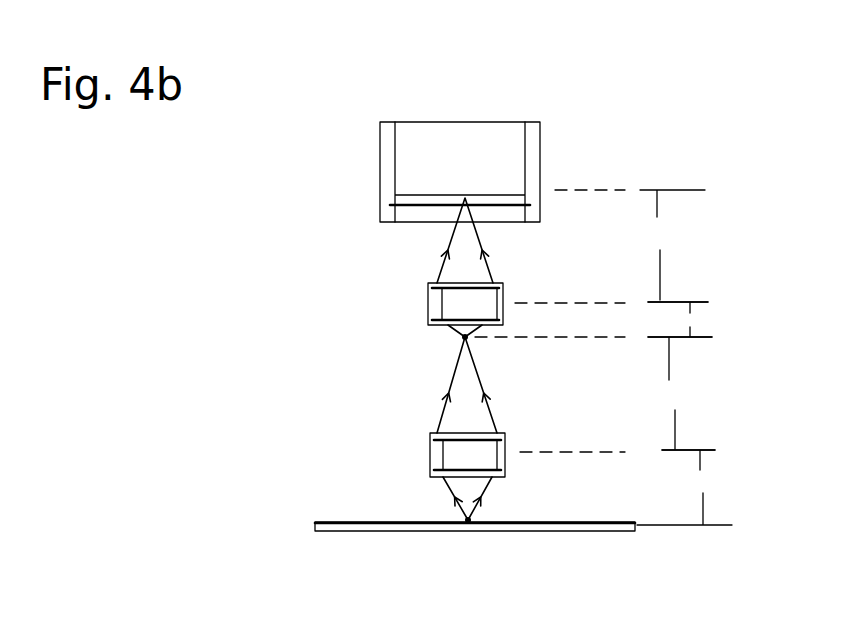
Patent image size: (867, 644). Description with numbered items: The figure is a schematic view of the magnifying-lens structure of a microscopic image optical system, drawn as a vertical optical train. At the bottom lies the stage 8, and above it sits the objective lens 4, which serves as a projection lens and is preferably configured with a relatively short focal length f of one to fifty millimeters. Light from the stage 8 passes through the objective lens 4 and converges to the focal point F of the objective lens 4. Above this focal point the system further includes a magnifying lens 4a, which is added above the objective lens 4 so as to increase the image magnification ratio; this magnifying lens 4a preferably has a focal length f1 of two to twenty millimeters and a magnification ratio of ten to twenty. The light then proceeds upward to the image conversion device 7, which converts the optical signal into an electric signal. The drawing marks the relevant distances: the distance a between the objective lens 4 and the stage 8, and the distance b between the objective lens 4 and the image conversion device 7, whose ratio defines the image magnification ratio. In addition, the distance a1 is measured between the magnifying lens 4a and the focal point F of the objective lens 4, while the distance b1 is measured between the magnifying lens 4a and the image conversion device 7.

The image conversion device 7 is at (503, 157).
The magnifying lens 4a is at (450, 303).
The focal length of the magnifying lens f1 is at (432, 298).
The focal point F is at (462, 338).
The objective lens 4 is at (445, 455).
The focal length f is at (505, 457).
The stage 8 is at (540, 531).
The distance between the magnifying lens and the image conversion device b1 is at (685, 246).
The distance between the magnifying lens and the focal point a1 is at (717, 314).
The distance between the objective lens and the image conversion device b is at (682, 393).
The distance between the objective lens and the stage a is at (690, 487).